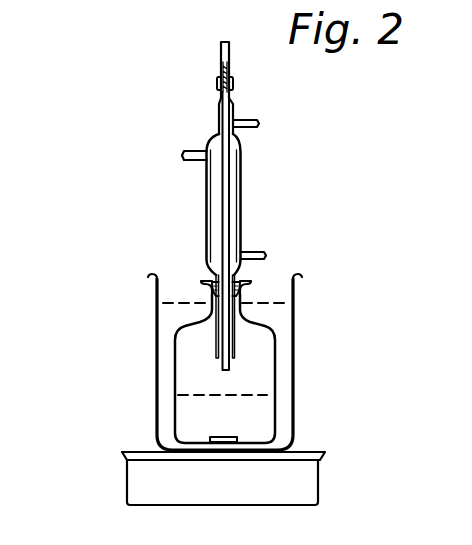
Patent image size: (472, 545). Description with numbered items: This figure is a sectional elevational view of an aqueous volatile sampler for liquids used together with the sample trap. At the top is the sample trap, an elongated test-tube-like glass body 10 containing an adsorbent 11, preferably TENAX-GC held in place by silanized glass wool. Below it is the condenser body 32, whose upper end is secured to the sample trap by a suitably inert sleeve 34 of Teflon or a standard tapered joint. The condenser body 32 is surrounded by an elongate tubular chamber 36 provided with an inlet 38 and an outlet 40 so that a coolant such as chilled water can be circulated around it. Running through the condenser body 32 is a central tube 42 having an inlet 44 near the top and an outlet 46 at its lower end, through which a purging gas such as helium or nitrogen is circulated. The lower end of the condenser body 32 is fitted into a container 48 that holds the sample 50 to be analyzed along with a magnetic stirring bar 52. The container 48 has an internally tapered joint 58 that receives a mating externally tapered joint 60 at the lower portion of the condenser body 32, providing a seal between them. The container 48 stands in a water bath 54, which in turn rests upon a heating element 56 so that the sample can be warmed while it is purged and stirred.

The sample trap body 10 is at (221, 50).
The adsorbent 11 is at (222, 73).
The sleeve 34 is at (217, 90).
The condenser body 32 is at (218, 123).
The inlet 44 is at (247, 119).
The inlet 38 is at (196, 161).
The central tube 42 is at (226, 180).
The tubular chamber 36 is at (242, 197).
The outlet 40 is at (253, 252).
The externally tapered joint 60 is at (206, 283).
The internally tapered joint 58 is at (245, 286).
The water bath 54 is at (295, 318).
The outlet 46 is at (228, 370).
The container 48 is at (274, 387).
The sample 50 is at (257, 412).
The magnetic stirring bar 52 is at (212, 437).
The heating element 56 is at (318, 482).